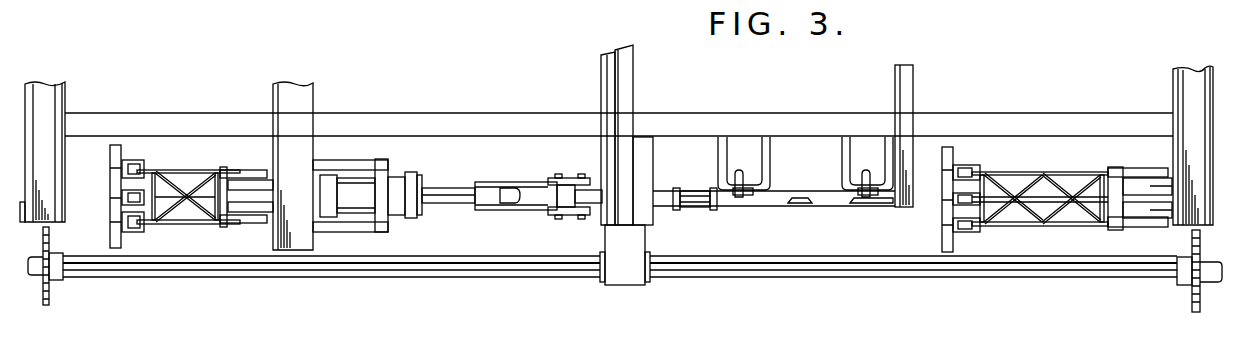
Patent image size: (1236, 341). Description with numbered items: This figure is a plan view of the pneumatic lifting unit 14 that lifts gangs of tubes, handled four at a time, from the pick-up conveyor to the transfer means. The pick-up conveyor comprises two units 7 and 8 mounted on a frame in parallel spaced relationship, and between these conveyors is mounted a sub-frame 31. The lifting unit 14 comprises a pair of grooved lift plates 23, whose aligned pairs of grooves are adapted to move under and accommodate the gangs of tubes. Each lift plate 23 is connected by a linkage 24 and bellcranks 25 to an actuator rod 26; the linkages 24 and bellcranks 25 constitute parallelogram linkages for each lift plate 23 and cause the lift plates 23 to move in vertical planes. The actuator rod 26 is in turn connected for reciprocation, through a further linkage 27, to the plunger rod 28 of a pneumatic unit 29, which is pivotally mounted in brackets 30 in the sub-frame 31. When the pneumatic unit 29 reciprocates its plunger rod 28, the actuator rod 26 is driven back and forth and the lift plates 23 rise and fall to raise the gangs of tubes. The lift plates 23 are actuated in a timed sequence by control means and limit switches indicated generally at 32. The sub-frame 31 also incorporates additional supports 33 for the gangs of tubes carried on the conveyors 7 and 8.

The pick-up conveyor unit 7 is at (1175, 101).
The pick-up conveyor unit 8 is at (65, 87).
The pneumatic lifting unit 14 is at (525, 101).
The grooved lift plate 23 is at (110, 236).
The linkage 24 is at (212, 225).
The bellcrank 25 is at (161, 170).
The actuator rod 26 is at (755, 207).
The linkage 27 is at (572, 178).
The plunger rod 28 is at (445, 188).
The pneumatic unit 29 is at (417, 214).
The bracket 30 is at (337, 162).
The sub-frame 31 is at (313, 143).
The control means and limit switches 32 is at (742, 183).
The additional support 33 is at (273, 97).